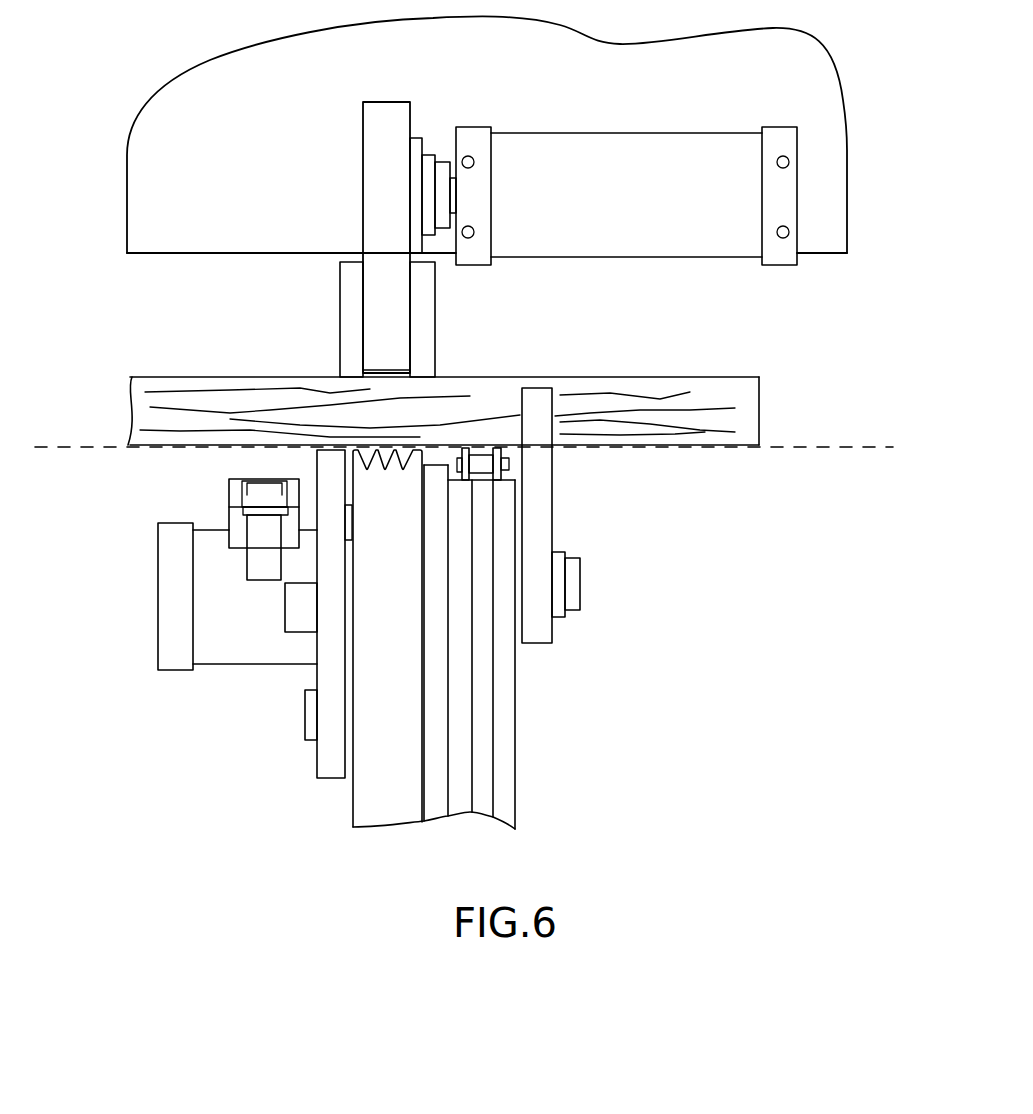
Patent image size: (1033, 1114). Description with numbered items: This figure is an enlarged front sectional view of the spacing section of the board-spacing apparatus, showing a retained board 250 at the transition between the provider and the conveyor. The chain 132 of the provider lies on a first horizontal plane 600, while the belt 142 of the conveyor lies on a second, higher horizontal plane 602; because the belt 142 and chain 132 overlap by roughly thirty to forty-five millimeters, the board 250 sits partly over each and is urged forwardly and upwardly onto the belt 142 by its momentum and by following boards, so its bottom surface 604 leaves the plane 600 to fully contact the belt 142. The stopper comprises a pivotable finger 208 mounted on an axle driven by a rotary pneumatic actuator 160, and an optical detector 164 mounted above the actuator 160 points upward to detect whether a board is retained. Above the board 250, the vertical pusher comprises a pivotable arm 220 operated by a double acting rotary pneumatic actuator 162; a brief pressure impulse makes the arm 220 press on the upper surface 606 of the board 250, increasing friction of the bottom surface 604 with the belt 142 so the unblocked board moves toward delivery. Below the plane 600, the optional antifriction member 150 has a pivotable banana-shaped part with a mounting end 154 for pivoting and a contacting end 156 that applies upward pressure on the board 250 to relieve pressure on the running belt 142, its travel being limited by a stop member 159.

The chain 132 is at (480, 467).
The belt 142 is at (368, 452).
The antifriction member 150 is at (308, 646).
The mounting end 154 is at (333, 765).
The contacting end 156 is at (327, 473).
The stop member 159 is at (293, 609).
The rotary pneumatic actuator 160 is at (243, 657).
The double acting rotary pneumatic actuator 162 is at (663, 145).
The optical detector 164 is at (265, 500).
The pivotable finger 208 is at (562, 470).
The pivotable arm 220 is at (360, 225).
The board 250 is at (647, 382).
The first horizontal plane 600 is at (812, 448).
The second horizontal plane 602 is at (885, 447).
The bottom surface 604 is at (143, 455).
The upper surface 606 is at (156, 372).